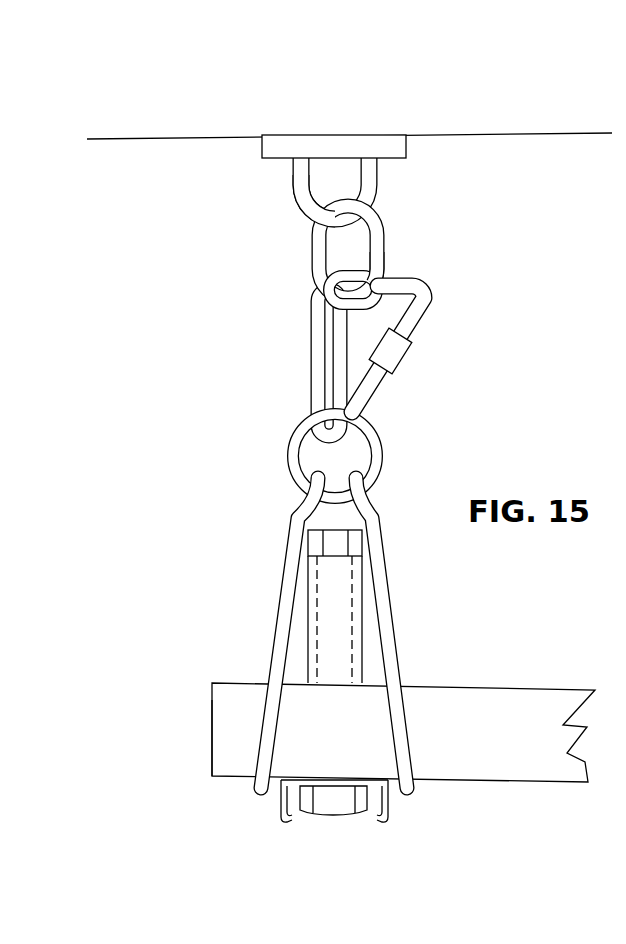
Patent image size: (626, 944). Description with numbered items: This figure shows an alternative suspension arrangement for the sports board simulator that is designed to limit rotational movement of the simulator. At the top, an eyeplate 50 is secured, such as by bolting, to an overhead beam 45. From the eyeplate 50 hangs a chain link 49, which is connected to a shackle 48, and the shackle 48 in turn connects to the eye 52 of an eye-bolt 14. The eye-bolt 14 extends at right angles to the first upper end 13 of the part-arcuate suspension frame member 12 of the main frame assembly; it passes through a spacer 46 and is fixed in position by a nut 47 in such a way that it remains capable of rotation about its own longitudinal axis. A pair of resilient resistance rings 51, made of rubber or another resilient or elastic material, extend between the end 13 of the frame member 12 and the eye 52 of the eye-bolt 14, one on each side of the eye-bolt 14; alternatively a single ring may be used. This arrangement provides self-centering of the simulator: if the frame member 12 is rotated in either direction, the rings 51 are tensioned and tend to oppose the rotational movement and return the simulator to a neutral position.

The suspension frame member 12 is at (490, 688).
The first upper end 13 is at (218, 768).
The eye-bolt 14 is at (353, 601).
The beam 45 is at (376, 99).
The spacer 46 is at (306, 639).
The nut 47 is at (333, 803).
The shackle 48 is at (420, 334).
The chain link 49 is at (391, 242).
The eyeplate 50 is at (283, 181).
The resilient resistance rings 51 is at (287, 548).
The eye 52 is at (293, 435).